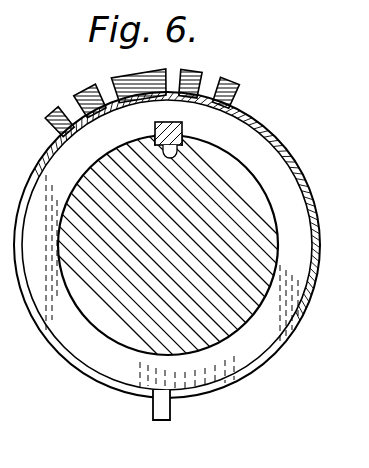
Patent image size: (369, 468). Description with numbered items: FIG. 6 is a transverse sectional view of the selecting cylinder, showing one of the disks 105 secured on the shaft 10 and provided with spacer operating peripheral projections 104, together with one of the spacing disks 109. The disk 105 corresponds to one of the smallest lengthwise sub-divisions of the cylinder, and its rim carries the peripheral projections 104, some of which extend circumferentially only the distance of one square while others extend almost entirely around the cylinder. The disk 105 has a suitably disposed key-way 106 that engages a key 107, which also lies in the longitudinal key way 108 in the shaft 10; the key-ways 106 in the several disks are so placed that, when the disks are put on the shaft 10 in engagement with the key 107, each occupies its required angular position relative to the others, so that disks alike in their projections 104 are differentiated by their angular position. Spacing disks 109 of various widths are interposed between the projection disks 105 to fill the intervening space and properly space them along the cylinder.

The shaft 10 is at (258, 267).
The peripheral projection 104 is at (163, 422).
The disk 105 is at (97, 382).
The key-way 106 is at (182, 127).
The key 107 is at (155, 126).
The longitudinal key way 108 is at (187, 152).
The spacing disk 109 is at (280, 320).